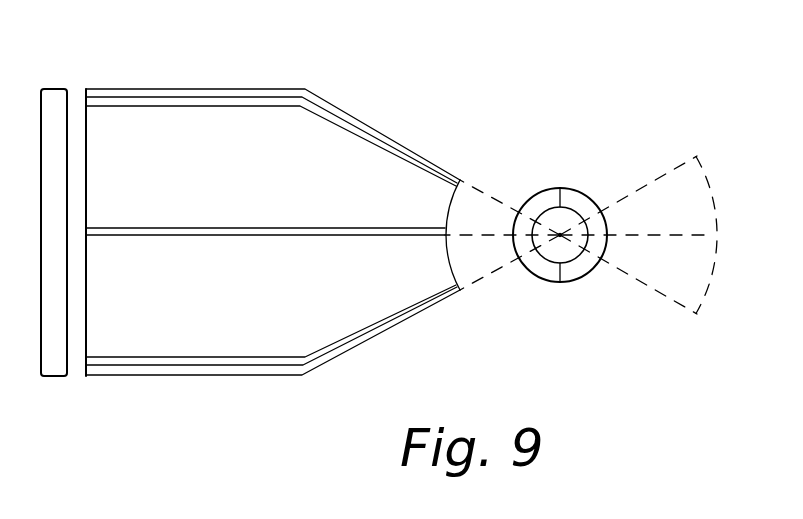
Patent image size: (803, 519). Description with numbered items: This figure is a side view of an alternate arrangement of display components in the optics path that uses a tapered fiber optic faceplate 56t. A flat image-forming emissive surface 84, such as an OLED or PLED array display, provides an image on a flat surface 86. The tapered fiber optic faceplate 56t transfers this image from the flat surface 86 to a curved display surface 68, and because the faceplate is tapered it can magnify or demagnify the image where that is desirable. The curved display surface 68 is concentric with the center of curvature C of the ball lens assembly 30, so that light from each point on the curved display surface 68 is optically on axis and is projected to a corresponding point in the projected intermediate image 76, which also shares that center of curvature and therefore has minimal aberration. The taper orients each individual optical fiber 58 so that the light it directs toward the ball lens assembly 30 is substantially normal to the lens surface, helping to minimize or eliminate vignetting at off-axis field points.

The flat image-forming emissive surface 84 is at (55, 88).
The flat surface 86 is at (69, 110).
The tapered fiber optic faceplate 56t is at (295, 87).
The optical fiber 58 is at (247, 366).
The curved display surface 68 is at (452, 250).
The ball lens assembly 30 is at (543, 190).
The center of curvature C is at (561, 234).
The projected intermediate image 76 is at (712, 190).